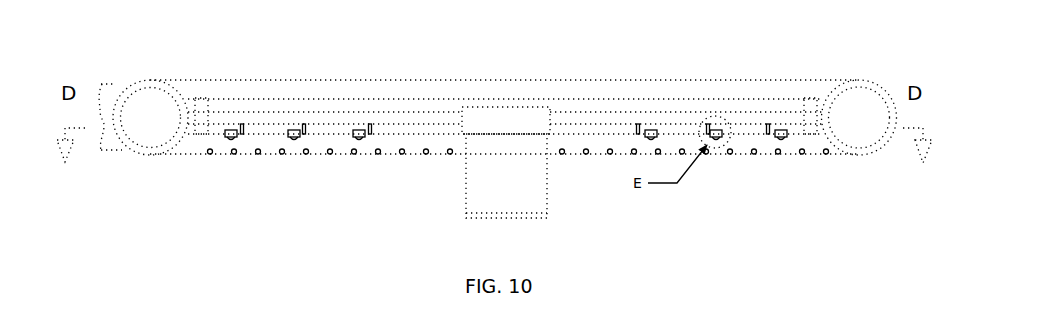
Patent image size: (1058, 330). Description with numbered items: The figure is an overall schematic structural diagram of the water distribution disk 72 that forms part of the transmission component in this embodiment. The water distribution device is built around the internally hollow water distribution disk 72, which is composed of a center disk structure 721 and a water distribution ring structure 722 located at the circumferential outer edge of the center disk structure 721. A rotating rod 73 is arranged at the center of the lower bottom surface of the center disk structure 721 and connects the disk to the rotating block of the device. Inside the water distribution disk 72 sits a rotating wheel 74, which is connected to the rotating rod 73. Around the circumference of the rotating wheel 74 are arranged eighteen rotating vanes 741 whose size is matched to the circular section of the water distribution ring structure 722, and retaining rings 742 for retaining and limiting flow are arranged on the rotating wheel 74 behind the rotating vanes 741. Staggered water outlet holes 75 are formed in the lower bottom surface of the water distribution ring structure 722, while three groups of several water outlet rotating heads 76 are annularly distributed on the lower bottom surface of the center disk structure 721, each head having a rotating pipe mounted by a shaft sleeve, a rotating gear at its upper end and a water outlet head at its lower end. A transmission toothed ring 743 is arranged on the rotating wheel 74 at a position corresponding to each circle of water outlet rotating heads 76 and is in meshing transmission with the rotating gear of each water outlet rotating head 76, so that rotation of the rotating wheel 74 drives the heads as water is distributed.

The water distribution disk 72 is at (367, 80).
The center disk structure 721 is at (622, 101).
The water distribution ring structure 722 is at (140, 82).
The rotating rod 73 is at (547, 187).
The rotating wheel 74 is at (505, 113).
The rotating vanes 741 is at (152, 133).
The retaining rings 742 is at (200, 130).
The transmission toothed ring 743 is at (245, 126).
The water outlet holes 75 is at (427, 152).
The water outlet rotating heads 76 is at (232, 142).